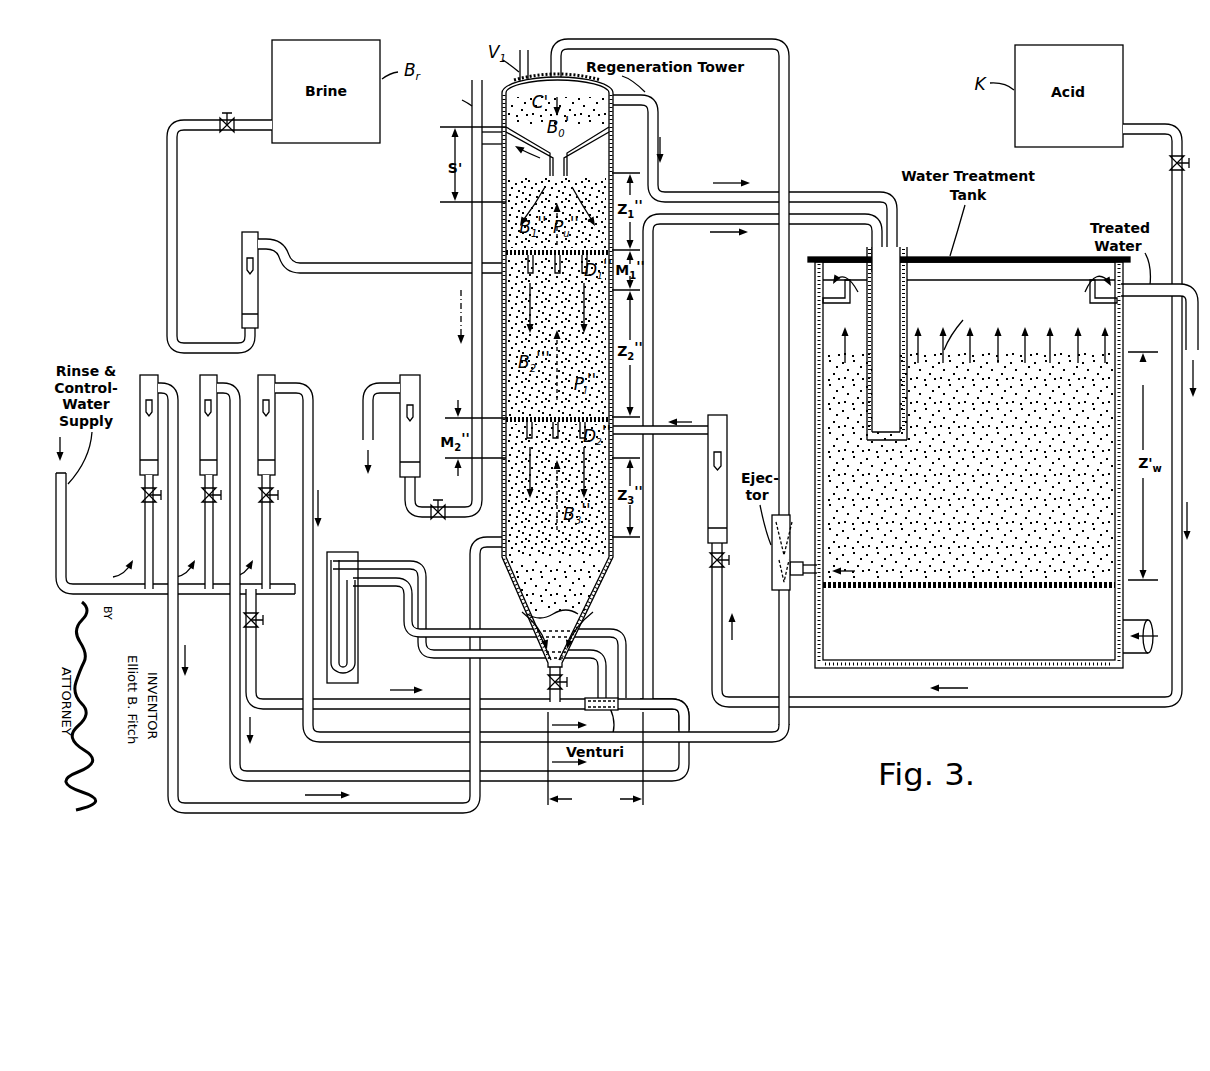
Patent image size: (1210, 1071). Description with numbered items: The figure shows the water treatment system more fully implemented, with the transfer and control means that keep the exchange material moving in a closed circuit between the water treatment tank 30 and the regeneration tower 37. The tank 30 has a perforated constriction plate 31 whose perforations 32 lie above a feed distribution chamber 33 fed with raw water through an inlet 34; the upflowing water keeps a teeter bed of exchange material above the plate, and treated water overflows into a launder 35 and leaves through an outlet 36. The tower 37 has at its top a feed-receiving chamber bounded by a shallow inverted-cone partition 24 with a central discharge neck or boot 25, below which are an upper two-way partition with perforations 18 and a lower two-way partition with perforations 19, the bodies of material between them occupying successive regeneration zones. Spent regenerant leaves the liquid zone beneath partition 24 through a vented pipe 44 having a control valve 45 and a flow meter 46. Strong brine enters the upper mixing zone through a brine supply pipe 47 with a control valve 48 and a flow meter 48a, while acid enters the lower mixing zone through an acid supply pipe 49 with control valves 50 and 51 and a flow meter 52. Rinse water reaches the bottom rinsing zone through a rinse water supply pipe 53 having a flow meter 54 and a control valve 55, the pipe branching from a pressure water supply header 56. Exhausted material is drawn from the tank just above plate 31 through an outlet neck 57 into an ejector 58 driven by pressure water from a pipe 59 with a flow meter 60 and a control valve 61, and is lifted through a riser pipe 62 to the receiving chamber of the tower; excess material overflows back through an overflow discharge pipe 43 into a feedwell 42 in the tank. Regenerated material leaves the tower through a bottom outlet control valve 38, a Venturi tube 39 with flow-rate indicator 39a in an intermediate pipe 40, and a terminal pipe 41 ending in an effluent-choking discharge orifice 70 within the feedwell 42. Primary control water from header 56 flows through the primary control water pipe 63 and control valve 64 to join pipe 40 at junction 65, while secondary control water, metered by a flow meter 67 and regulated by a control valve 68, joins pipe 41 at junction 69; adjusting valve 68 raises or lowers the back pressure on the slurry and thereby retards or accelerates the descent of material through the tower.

The perforations 18 is at (526, 258).
The perforations 19 is at (526, 425).
The partition 24 is at (576, 142).
The discharge neck or boot 25 is at (535, 162).
The water treatment tank 30 is at (1003, 256).
The constriction plate 31 is at (880, 591).
The perforations 32 is at (950, 591).
The feed distribution chamber 33 is at (1010, 627).
The inlet 34 is at (1132, 620).
The launder 35 is at (1085, 292).
The outlet 36 is at (1140, 299).
The regeneration tower 37 is at (536, 74).
The bottom outlet control valve 38 is at (548, 684).
The Venturi tube 39 is at (598, 697).
The flow-rate indicator 39a is at (352, 600).
The intermediate length of pipe 40 is at (595, 761).
The terminal length of pipe 41 is at (653, 612).
The feedwell 42 is at (908, 302).
The overflow discharge pipe 43 is at (820, 193).
The vented pipe 44 is at (474, 250).
The control valve 45 is at (438, 522).
The flow meter 46 is at (412, 374).
The brine supply pipe 47 is at (177, 195).
The control valve 48 is at (229, 135).
The flow meter 48a is at (260, 236).
The acid supply pipe 49 is at (1032, 708).
The control valve 50 is at (1168, 165).
The control valve 51 is at (710, 562).
The flow meter 52 is at (729, 452).
The rinse water supply pipe 53 is at (179, 735).
The flow meter 54 is at (140, 436).
The control valve 55 is at (142, 500).
The pressure water supply header 56 is at (66, 545).
The outlet neck 57 is at (792, 588).
The ejector 58 is at (773, 570).
The pipe 59 is at (740, 745).
The flow meter 60 is at (276, 422).
The control valve 61 is at (272, 500).
The riser pipe 62 is at (777, 360).
The primary control water pipe 63 is at (438, 697).
The control valve 64 is at (258, 624).
The junction 65 is at (553, 701).
The flow meter 67 is at (200, 396).
The control valve 68 is at (203, 500).
The junction 69 is at (652, 698).
The discharge orifice 70 is at (866, 252).